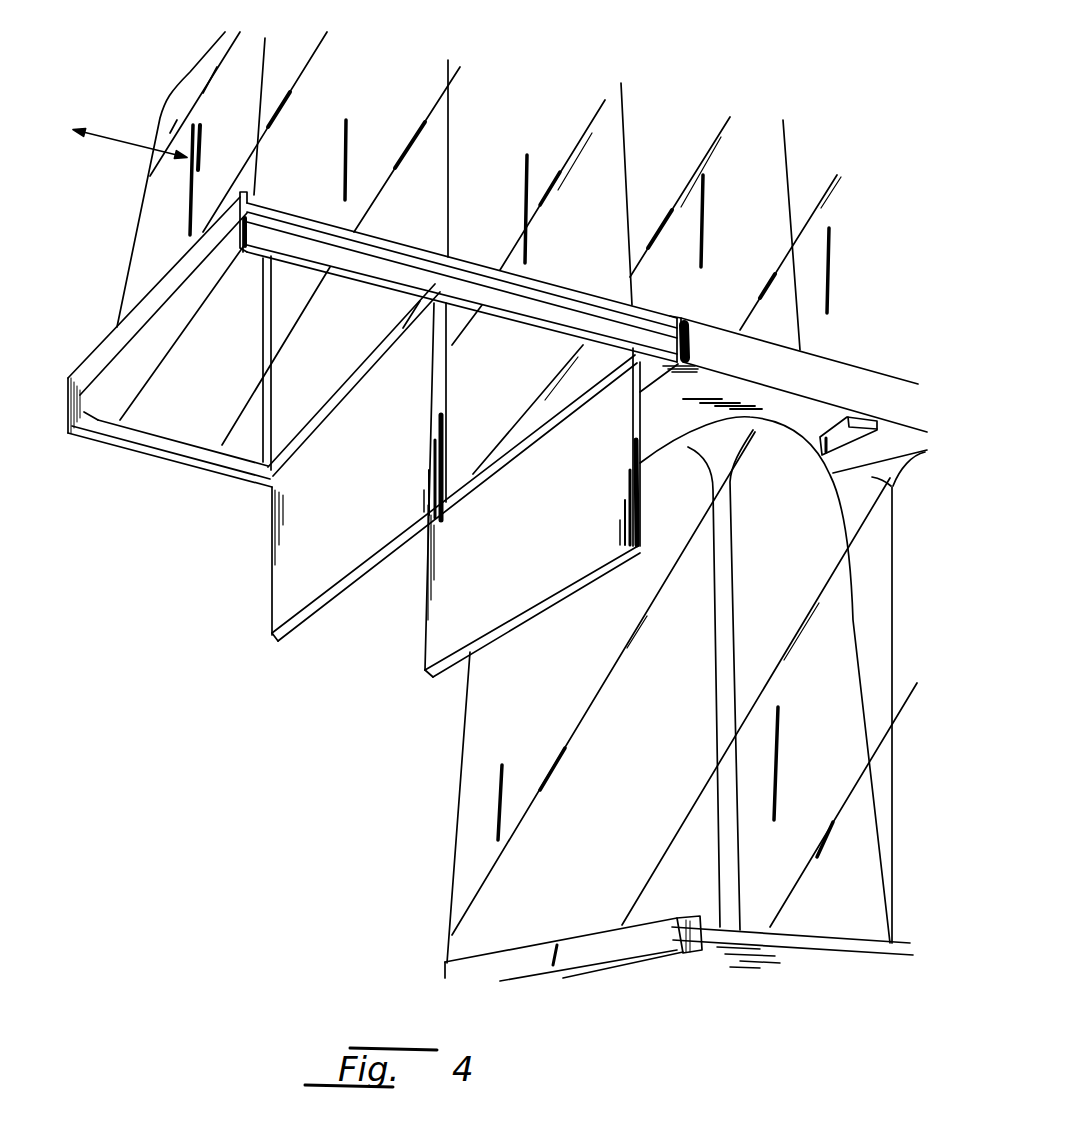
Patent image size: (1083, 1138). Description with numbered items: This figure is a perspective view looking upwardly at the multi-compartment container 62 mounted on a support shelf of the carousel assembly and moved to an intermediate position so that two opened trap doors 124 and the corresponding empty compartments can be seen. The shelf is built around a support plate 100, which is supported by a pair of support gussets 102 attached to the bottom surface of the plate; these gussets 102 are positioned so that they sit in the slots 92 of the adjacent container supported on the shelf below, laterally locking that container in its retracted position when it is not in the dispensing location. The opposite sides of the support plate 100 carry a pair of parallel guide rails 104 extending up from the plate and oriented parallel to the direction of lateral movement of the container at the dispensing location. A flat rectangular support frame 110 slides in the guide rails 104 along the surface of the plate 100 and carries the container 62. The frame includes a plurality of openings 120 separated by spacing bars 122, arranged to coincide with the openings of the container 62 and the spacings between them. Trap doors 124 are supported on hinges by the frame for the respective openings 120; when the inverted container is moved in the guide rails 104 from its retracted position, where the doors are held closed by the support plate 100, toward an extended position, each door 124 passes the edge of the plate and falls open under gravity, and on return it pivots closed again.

The container 62 is at (481, 772).
The slots 92 is at (866, 606).
The support plate 100 is at (793, 403).
The support gussets 102 is at (815, 453).
The guide rails 104 is at (746, 356).
The support frame 110 is at (376, 267).
The openings 120 is at (215, 418).
The spacing bars 122 is at (357, 373).
The trap doors 124 is at (293, 558).